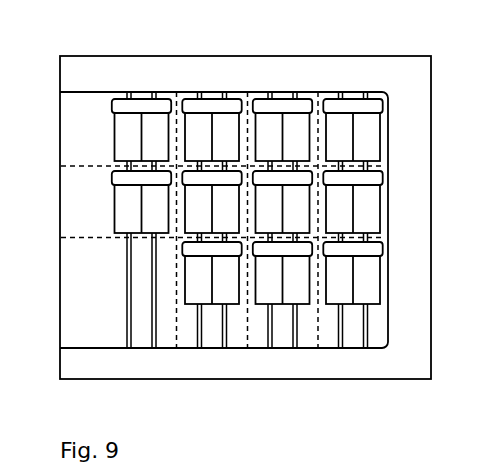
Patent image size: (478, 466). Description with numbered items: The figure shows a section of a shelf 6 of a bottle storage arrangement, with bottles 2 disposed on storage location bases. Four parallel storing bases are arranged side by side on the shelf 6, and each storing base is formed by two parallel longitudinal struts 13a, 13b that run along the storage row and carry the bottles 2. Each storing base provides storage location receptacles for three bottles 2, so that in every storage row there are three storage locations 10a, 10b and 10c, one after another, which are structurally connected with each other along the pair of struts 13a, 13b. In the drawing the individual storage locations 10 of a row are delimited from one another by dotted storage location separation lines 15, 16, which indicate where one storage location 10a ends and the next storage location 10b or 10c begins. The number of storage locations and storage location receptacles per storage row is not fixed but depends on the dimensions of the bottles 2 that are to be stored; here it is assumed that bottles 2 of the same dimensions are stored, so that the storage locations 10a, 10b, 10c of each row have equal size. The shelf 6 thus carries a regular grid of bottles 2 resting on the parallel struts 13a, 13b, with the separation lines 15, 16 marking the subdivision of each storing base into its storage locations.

The bottle 2 is at (152, 125).
The shelf 6 is at (307, 348).
The storage location 10 is at (85, 325).
The storage location 10a is at (237, 325).
The storage location 10b is at (245, 205).
The storage location 10c is at (242, 96).
The longitudinal strut 13a is at (127, 326).
The longitudinal strut 13b is at (153, 327).
The storage location separation line 15 is at (177, 325).
The storage location separation line 16 is at (93, 239).